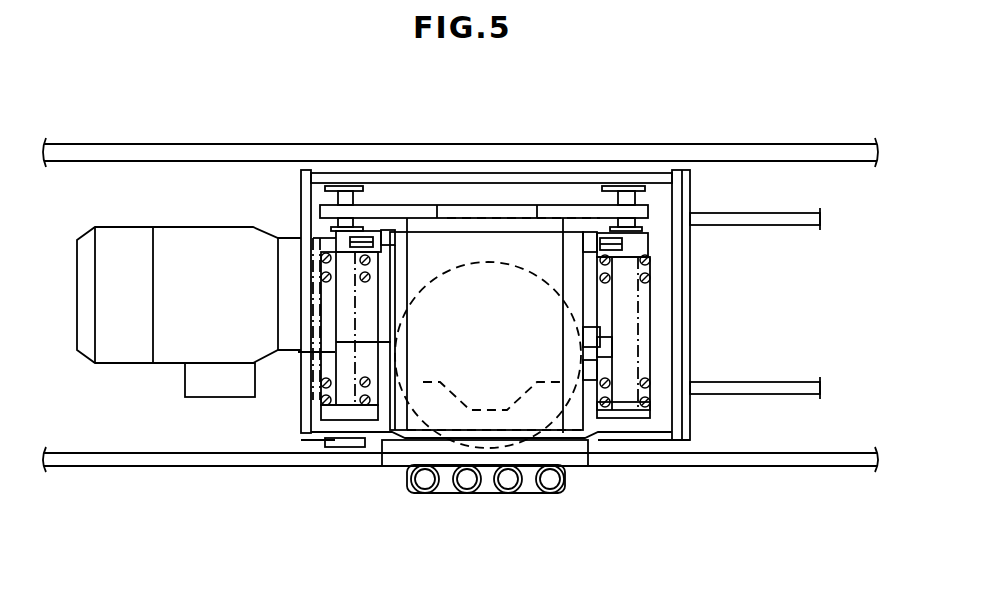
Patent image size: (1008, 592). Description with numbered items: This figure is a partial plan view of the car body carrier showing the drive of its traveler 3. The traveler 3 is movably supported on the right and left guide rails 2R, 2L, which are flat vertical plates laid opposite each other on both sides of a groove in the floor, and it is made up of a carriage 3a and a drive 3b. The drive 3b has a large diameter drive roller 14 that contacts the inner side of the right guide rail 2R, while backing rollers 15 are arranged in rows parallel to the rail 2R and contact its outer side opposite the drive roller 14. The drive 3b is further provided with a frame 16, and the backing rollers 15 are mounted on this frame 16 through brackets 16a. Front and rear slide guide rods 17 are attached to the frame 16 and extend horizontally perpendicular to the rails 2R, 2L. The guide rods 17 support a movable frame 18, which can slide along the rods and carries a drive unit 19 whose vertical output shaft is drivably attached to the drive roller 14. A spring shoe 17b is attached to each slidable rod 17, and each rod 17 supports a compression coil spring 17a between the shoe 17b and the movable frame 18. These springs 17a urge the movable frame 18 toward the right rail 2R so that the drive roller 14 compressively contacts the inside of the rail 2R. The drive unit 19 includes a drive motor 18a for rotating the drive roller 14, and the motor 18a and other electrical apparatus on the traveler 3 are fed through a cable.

The left guide rail 2L is at (725, 152).
The right guide rail 2R is at (812, 468).
The traveler 3 is at (764, 203).
The carriage 3a is at (752, 400).
The drive 3b is at (478, 176).
The drive roller 14 is at (440, 290).
The backing rollers 15 is at (422, 493).
The frame 16 is at (378, 443).
The brackets 16a is at (487, 493).
The slide guide rods 17 is at (623, 316).
The compression coil springs 17a is at (650, 385).
The spring shoe 17b is at (331, 232).
The movable frame 18 is at (370, 205).
The drive motor 18a is at (232, 308).
The drive unit 19 is at (497, 349).